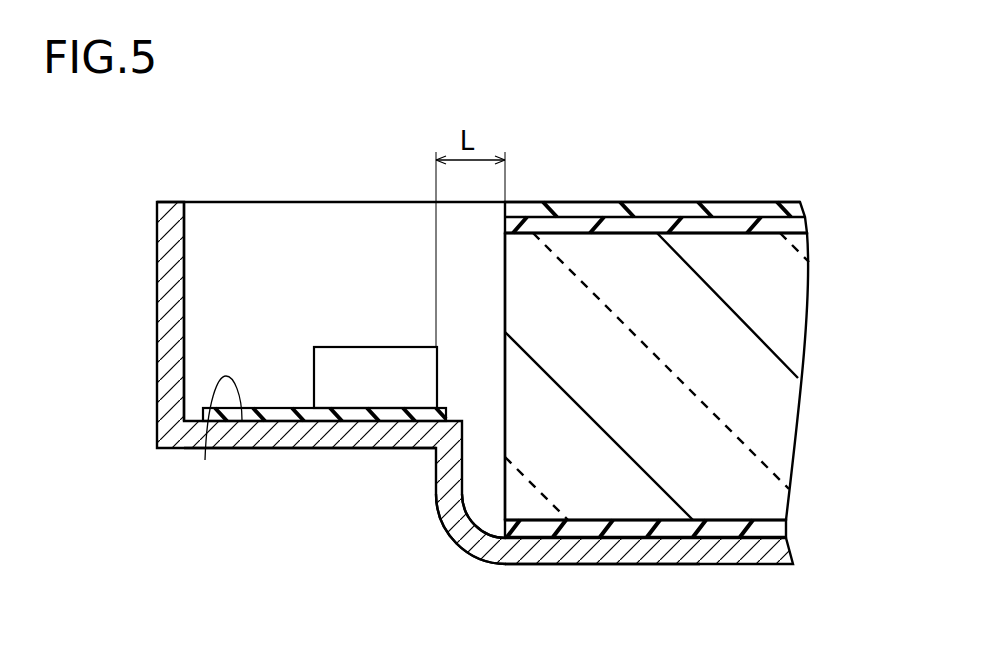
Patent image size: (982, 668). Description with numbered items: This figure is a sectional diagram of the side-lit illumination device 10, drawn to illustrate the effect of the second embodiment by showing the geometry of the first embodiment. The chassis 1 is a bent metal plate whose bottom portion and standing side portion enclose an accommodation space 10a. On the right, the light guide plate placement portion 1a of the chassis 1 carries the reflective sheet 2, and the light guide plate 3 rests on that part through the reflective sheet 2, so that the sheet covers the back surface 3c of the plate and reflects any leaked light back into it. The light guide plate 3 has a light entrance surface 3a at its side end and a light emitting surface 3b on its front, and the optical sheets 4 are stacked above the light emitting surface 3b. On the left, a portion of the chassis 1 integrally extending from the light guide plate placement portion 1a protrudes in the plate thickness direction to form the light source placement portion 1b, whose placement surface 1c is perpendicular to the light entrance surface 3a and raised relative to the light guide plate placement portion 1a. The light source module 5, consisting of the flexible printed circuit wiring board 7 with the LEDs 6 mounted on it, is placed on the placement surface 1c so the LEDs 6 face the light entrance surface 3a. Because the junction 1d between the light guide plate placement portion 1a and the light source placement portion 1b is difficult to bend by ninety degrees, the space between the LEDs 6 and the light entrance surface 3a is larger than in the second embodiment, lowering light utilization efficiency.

The chassis 1 is at (782, 552).
The light guide plate placement portion 1a is at (540, 557).
The light source placement portion 1b is at (277, 448).
The placement surface 1c is at (205, 460).
The junction 1d is at (445, 475).
The reflective sheet 2 is at (778, 527).
The light guide plate 3 is at (788, 400).
The light entrance surface 3a is at (502, 437).
The light emitting surface 3b is at (613, 233).
The back surface 3c is at (632, 520).
The optical sheets 4 is at (795, 210).
The light source module 5 is at (324, 250).
The LEDs 6 is at (331, 357).
The flexible printed circuit wiring board 7 is at (277, 412).
The illumination device 10 is at (748, 160).
The accommodation space 10a is at (386, 285).